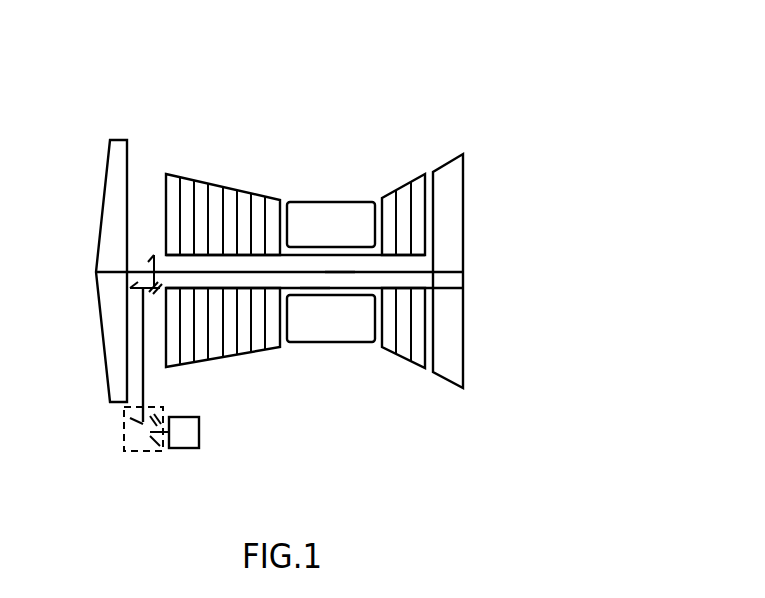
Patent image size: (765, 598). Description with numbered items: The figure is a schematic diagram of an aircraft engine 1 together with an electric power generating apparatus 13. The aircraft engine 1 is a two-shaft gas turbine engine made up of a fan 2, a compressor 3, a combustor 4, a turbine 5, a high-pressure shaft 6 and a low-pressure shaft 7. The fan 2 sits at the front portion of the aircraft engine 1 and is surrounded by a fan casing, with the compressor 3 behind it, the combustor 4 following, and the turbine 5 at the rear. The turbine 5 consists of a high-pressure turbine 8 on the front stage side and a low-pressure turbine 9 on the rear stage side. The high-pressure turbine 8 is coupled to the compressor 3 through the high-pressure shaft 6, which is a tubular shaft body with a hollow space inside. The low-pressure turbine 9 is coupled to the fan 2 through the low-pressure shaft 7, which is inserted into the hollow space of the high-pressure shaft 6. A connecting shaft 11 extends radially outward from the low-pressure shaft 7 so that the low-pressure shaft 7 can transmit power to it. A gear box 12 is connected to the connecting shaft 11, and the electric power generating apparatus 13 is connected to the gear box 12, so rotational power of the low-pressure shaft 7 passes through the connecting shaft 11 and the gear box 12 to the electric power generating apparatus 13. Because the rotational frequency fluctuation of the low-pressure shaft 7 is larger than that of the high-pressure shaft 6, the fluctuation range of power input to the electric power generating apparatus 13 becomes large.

The aircraft engine 1 is at (403, 91).
The fan 2 is at (118, 140).
The compressor 3 is at (200, 180).
The combustor 4 is at (298, 342).
The turbine 5 is at (418, 313).
The high-pressure shaft 6 is at (313, 288).
The low-pressure shaft 7 is at (340, 272).
The high-pressure turbine 8 is at (403, 358).
The low-pressure turbine 9 is at (443, 293).
The connecting shaft 11 is at (142, 333).
The gear box 12 is at (135, 453).
The electric power generating apparatus 13 is at (178, 448).